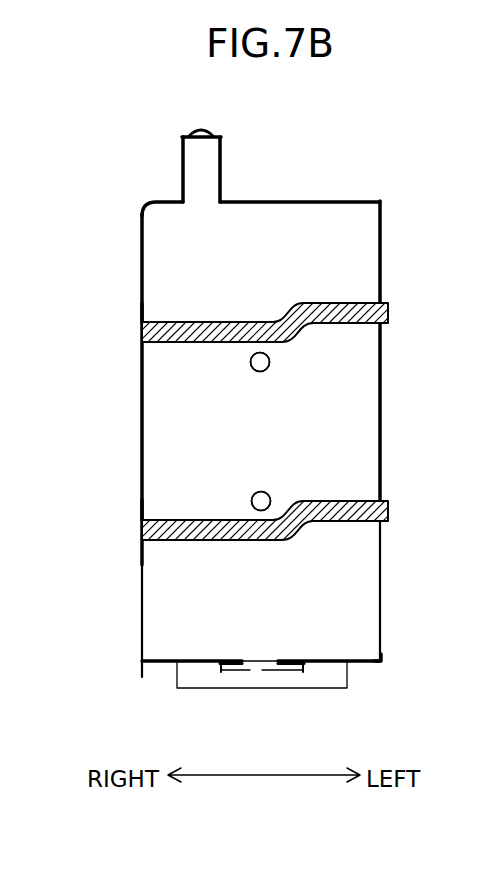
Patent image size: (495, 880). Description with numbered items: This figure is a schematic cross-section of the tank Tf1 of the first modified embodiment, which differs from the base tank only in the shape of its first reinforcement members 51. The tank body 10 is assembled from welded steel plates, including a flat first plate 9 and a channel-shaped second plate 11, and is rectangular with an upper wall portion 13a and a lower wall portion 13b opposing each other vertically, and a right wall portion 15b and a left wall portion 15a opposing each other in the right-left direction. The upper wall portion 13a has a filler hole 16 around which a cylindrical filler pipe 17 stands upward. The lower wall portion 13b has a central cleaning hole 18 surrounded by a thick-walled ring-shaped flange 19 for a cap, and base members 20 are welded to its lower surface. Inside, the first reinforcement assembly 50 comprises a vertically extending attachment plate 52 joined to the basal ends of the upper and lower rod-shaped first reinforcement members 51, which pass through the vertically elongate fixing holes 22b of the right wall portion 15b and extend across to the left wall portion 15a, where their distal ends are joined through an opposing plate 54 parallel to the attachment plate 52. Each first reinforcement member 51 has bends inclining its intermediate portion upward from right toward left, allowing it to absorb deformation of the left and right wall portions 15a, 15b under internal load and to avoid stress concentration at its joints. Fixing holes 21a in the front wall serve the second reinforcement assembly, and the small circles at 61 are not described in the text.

The tank Tf1 is at (355, 121).
The tank body 10 is at (138, 211).
The first plate 9 is at (382, 240).
The second plate 11 is at (381, 663).
The upper wall portion 13a is at (322, 201).
The lower wall portion 13b is at (356, 663).
The left wall portion 15a is at (383, 602).
The right wall portion 15b is at (140, 604).
The filler hole 16 is at (219, 200).
The filler pipe 17 is at (221, 152).
The cleaning hole 18 is at (276, 658).
The ring-shaped flange 19 is at (296, 673).
The base member 20 is at (211, 689).
The fixing hole 21a is at (262, 372).
The fixing hole 22b is at (146, 306).
The first reinforcement assembly 50 is at (141, 358).
The first reinforcement member 51 is at (140, 330).
The attachment plate 52 is at (140, 440).
The opposing plate 54 is at (383, 403).
The through hole 61 is at (250, 363).